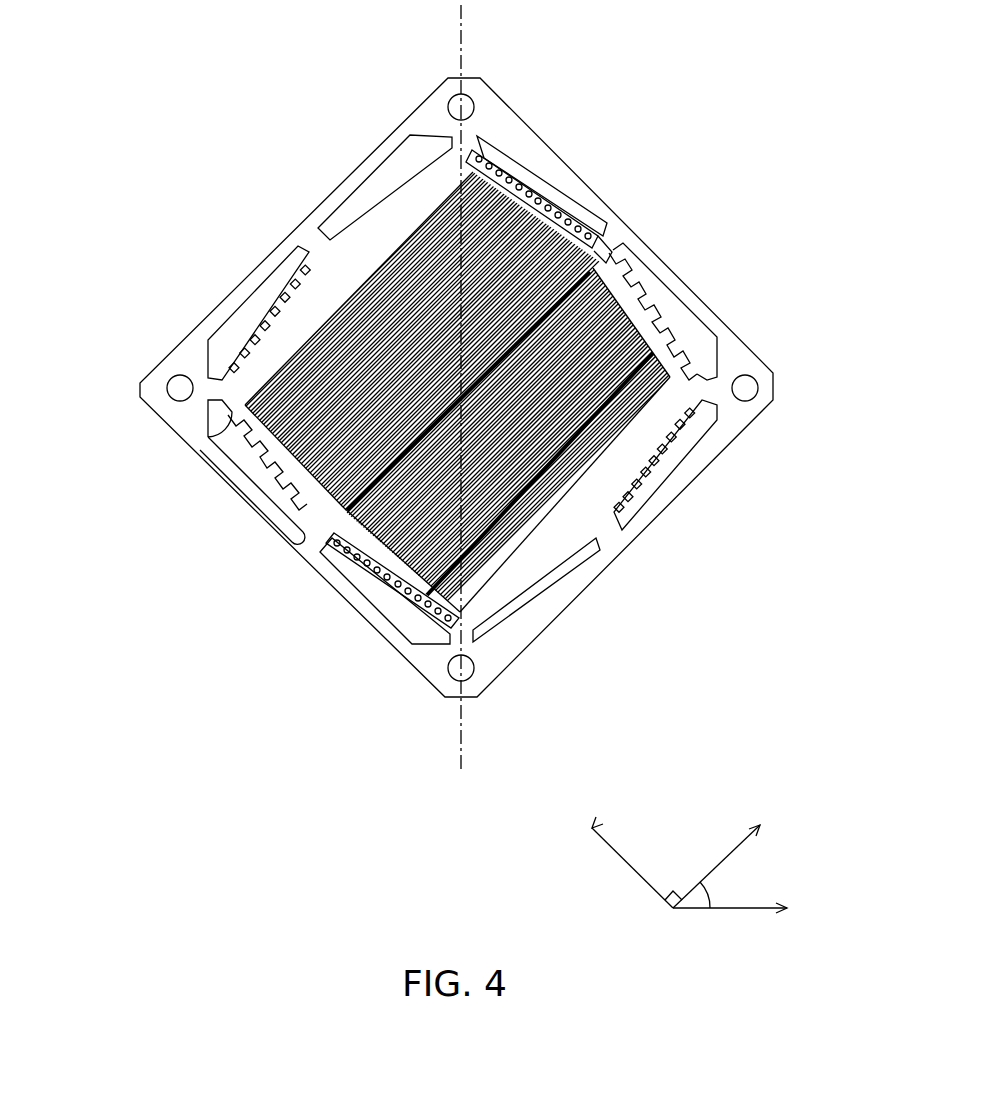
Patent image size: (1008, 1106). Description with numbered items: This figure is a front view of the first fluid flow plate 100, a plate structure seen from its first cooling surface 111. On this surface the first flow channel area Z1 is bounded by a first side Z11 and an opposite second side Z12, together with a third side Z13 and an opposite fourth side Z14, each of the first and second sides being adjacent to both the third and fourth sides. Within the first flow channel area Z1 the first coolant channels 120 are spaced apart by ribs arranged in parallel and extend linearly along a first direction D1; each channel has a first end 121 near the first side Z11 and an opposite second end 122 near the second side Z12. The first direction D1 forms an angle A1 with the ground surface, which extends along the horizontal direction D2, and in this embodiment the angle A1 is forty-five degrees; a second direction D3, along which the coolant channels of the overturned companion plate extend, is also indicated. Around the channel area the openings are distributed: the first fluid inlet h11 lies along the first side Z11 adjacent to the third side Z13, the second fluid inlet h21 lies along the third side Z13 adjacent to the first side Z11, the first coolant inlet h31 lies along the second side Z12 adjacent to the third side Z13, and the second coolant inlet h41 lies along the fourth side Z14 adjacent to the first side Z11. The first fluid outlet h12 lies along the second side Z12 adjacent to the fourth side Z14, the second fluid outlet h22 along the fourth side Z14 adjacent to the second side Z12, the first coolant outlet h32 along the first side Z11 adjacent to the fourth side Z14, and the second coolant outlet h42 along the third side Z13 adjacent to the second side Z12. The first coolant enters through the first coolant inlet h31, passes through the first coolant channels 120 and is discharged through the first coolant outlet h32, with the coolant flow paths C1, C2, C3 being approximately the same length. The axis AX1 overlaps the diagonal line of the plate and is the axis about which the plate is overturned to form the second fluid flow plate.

The first fluid flow plate 100 is at (458, 369).
The first cooling surface 111 is at (183, 412).
The first coolant channels 120 is at (320, 340).
The first end 121 is at (576, 151).
The second end 122 is at (190, 435).
The first fluid inlet h11 is at (530, 173).
The first fluid outlet h12 is at (393, 603).
The second fluid inlet h21 is at (393, 175).
The second fluid outlet h22 is at (533, 603).
The first coolant inlet h31 is at (238, 450).
The first coolant outlet h32 is at (715, 286).
The second coolant inlet h41 is at (670, 473).
The second coolant outlet h42 is at (227, 340).
The first flow channel area Z1 is at (290, 520).
The first side Z11 is at (607, 267).
The second side Z12 is at (322, 527).
The third side Z13 is at (357, 280).
The fourth side Z14 is at (573, 493).
The coolant flow path C1 is at (573, 227).
The coolant flow path C2 is at (620, 307).
The coolant flow path C3 is at (362, 572).
The axis AX1 is at (470, 13).
The first direction D1 is at (735, 854).
The horizontal direction D2 is at (750, 912).
The second direction D3 is at (620, 854).
The angle A1 is at (705, 891).